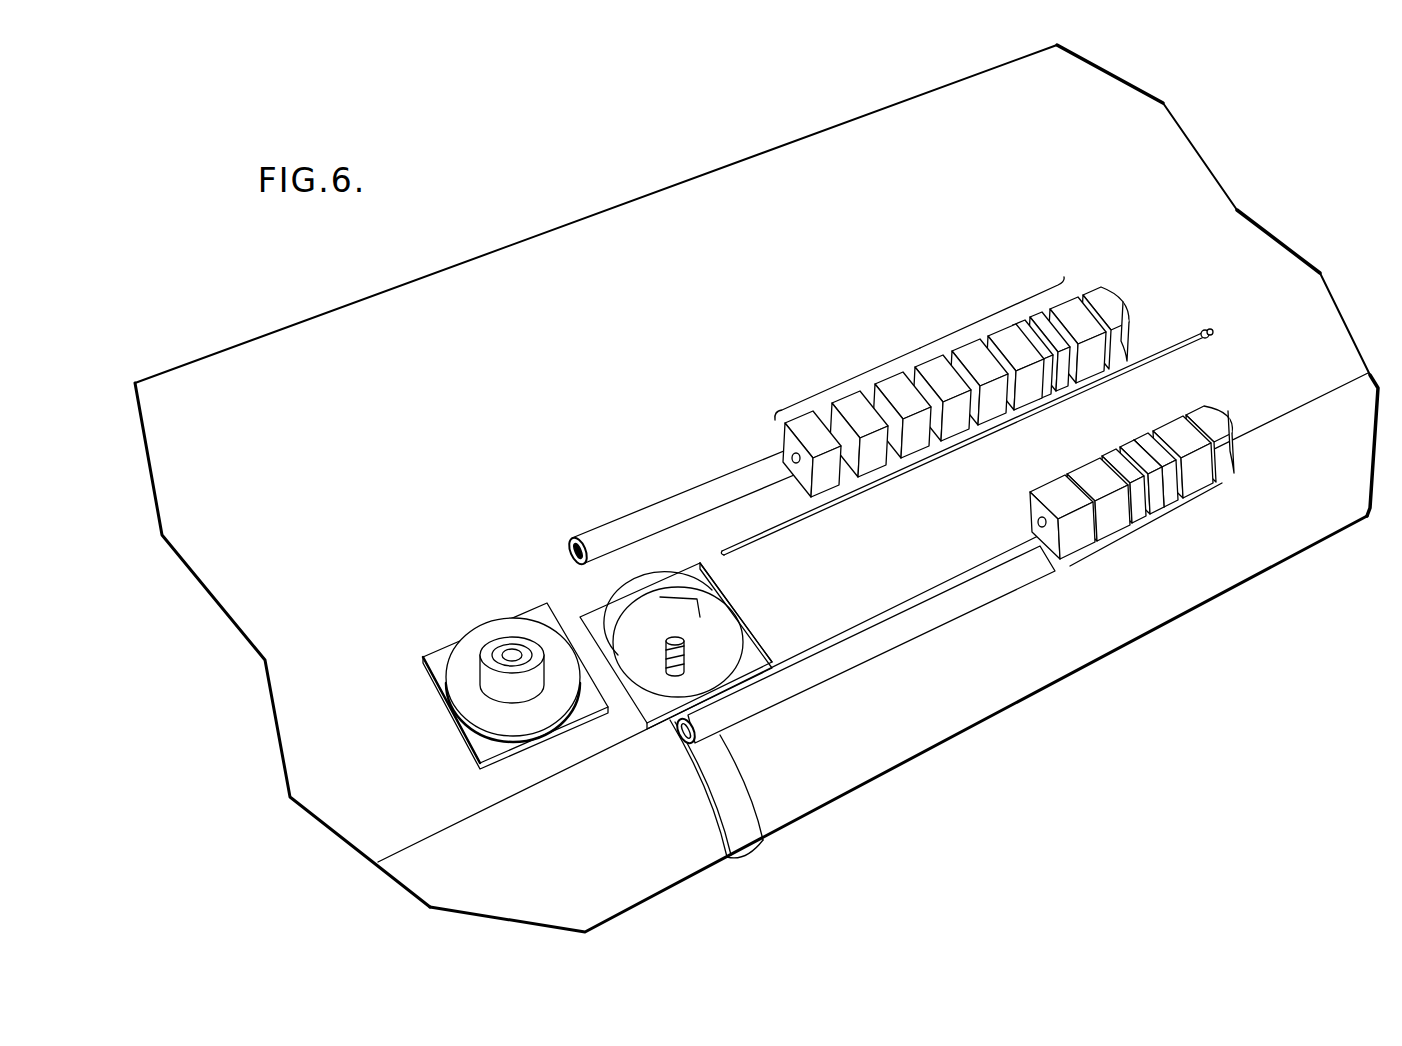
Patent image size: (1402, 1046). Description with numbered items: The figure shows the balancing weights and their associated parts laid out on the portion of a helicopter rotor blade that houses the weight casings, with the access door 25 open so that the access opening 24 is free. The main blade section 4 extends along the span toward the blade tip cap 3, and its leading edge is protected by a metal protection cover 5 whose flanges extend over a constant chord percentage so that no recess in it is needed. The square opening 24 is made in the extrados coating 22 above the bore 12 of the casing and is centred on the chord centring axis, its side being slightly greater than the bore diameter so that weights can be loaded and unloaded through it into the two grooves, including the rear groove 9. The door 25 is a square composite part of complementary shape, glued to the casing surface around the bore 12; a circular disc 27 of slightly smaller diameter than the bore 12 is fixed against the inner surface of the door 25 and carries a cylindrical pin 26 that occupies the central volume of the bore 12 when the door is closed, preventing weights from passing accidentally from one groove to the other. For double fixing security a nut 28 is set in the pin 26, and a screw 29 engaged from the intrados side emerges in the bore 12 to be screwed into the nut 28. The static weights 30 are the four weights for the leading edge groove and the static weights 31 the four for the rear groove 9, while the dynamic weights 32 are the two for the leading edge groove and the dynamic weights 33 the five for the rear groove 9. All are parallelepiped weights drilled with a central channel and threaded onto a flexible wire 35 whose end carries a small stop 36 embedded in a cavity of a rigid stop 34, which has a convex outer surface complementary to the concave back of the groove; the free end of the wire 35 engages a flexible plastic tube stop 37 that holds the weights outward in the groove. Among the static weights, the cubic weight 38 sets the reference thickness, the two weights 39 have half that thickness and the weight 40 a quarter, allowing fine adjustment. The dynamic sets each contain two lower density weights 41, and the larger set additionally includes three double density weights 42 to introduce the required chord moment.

The blade tip cap 3 is at (1207, 230).
The aerodynamic profile main blade section 4 is at (337, 302).
The metal protection cover 5 is at (640, 857).
The rear groove 9 is at (647, 600).
The bore 12 is at (703, 635).
The extrados coating 22 is at (597, 308).
The opening 24 is at (765, 648).
The access door 25 is at (435, 665).
The cylindrical pin 26 is at (488, 648).
The circular disc 27 is at (478, 707).
The nut 28 is at (507, 642).
The screw 29 is at (690, 670).
The static weights 30 is at (1146, 524).
The static weights 31 is at (992, 305).
The dynamic weights 32 is at (1080, 526).
The dynamic weights 33 is at (847, 368).
The rigid stop 34 is at (1107, 315).
The flexible wire 35 is at (770, 533).
The small stop 36 is at (1214, 333).
The mechanical stop 37 is at (653, 512).
The weight 38 is at (1070, 312).
The weights 39 is at (1023, 393).
The weight 40 is at (1022, 331).
The lowest density weights 41 is at (978, 348).
The double density weights 42 is at (912, 440).